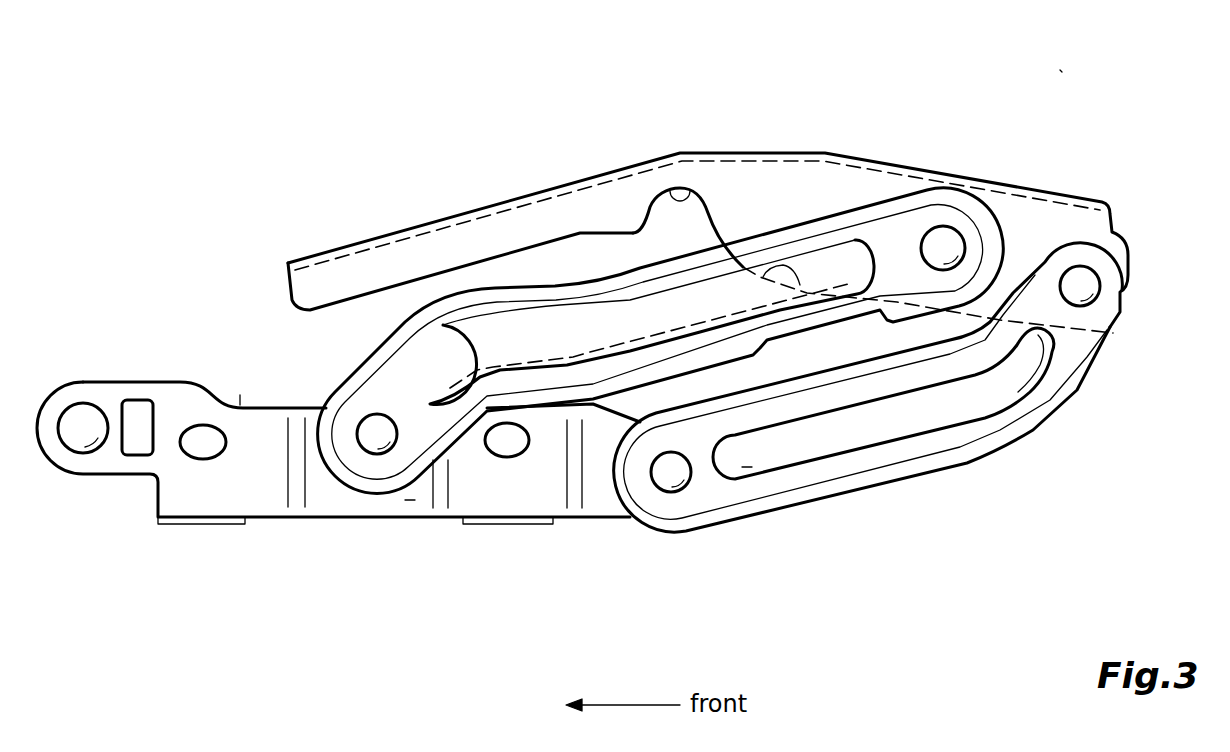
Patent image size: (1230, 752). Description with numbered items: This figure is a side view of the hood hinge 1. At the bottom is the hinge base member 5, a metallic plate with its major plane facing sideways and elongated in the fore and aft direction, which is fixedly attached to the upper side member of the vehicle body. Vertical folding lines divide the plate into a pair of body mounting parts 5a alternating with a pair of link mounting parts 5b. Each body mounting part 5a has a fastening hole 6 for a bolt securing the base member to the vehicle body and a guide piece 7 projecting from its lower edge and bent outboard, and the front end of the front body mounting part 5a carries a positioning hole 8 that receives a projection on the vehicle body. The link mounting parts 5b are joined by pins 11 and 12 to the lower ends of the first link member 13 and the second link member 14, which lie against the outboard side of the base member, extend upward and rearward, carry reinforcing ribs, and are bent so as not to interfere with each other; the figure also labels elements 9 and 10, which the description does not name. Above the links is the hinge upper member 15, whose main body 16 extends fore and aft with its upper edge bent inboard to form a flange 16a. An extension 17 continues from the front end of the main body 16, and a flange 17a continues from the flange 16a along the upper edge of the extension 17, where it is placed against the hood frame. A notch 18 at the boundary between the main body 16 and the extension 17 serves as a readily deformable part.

The hood hinge 1 is at (1048, 79).
The hinge base member 5 is at (331, 524).
The body mounting part 5a is at (258, 432).
The link mounting part 5b is at (411, 503).
The fastening hole 6 is at (203, 448).
The guide piece 7 is at (227, 522).
The positioning hole 8 is at (84, 440).
The first link 9 is at (707, 345).
The second link 10 is at (890, 457).
The pin 11 is at (378, 444).
The pin 12 is at (672, 483).
The first link member 13 is at (943, 237).
The second link member 14 is at (1080, 277).
The hinge upper member 15 is at (708, 195).
The main body 16 is at (837, 180).
The flange 16a is at (898, 163).
The extension 17 is at (418, 247).
The flange 17a is at (477, 210).
The notch 18 is at (668, 187).